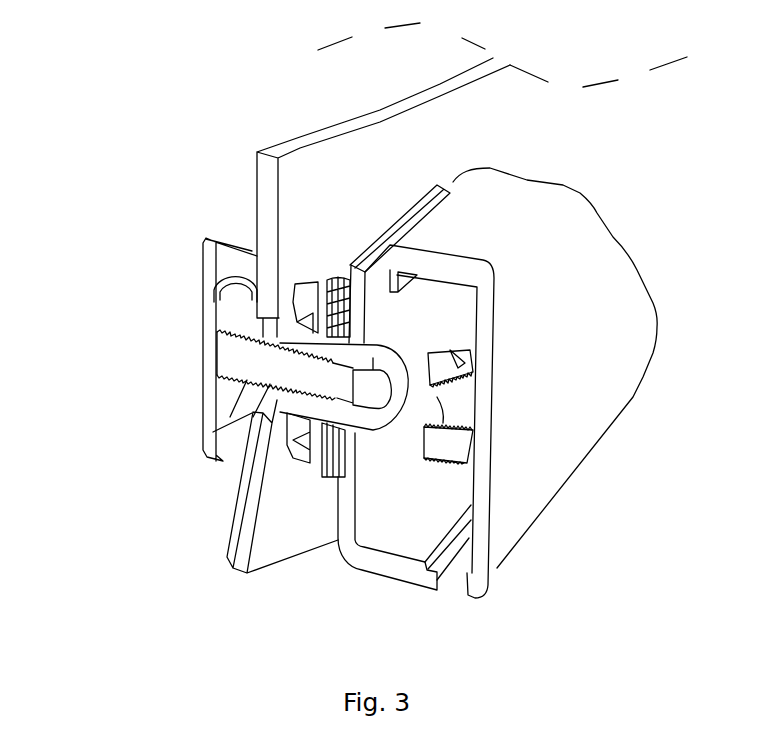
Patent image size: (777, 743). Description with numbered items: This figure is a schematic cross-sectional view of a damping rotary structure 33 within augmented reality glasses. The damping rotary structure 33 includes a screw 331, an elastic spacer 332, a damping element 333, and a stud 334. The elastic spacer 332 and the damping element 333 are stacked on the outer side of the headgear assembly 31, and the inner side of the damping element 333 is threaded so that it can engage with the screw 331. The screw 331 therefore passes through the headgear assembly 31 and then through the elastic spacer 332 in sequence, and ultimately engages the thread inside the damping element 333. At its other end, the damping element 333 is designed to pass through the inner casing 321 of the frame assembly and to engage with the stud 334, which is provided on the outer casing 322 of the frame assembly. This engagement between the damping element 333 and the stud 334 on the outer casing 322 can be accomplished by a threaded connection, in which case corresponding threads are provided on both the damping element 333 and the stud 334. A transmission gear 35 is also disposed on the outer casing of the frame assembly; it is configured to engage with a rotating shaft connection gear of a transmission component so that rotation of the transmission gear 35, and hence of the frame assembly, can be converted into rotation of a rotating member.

The headgear assembly 31 is at (270, 177).
The damping rotary structure 33 is at (563, 362).
The transmission gear 35 is at (460, 368).
The screw 331 is at (205, 256).
The elastic spacer 332 is at (295, 302).
The damping element 333 is at (212, 420).
The stud 334 is at (455, 445).
The inner casing 321 is at (397, 568).
The outer casing 322 is at (525, 520).